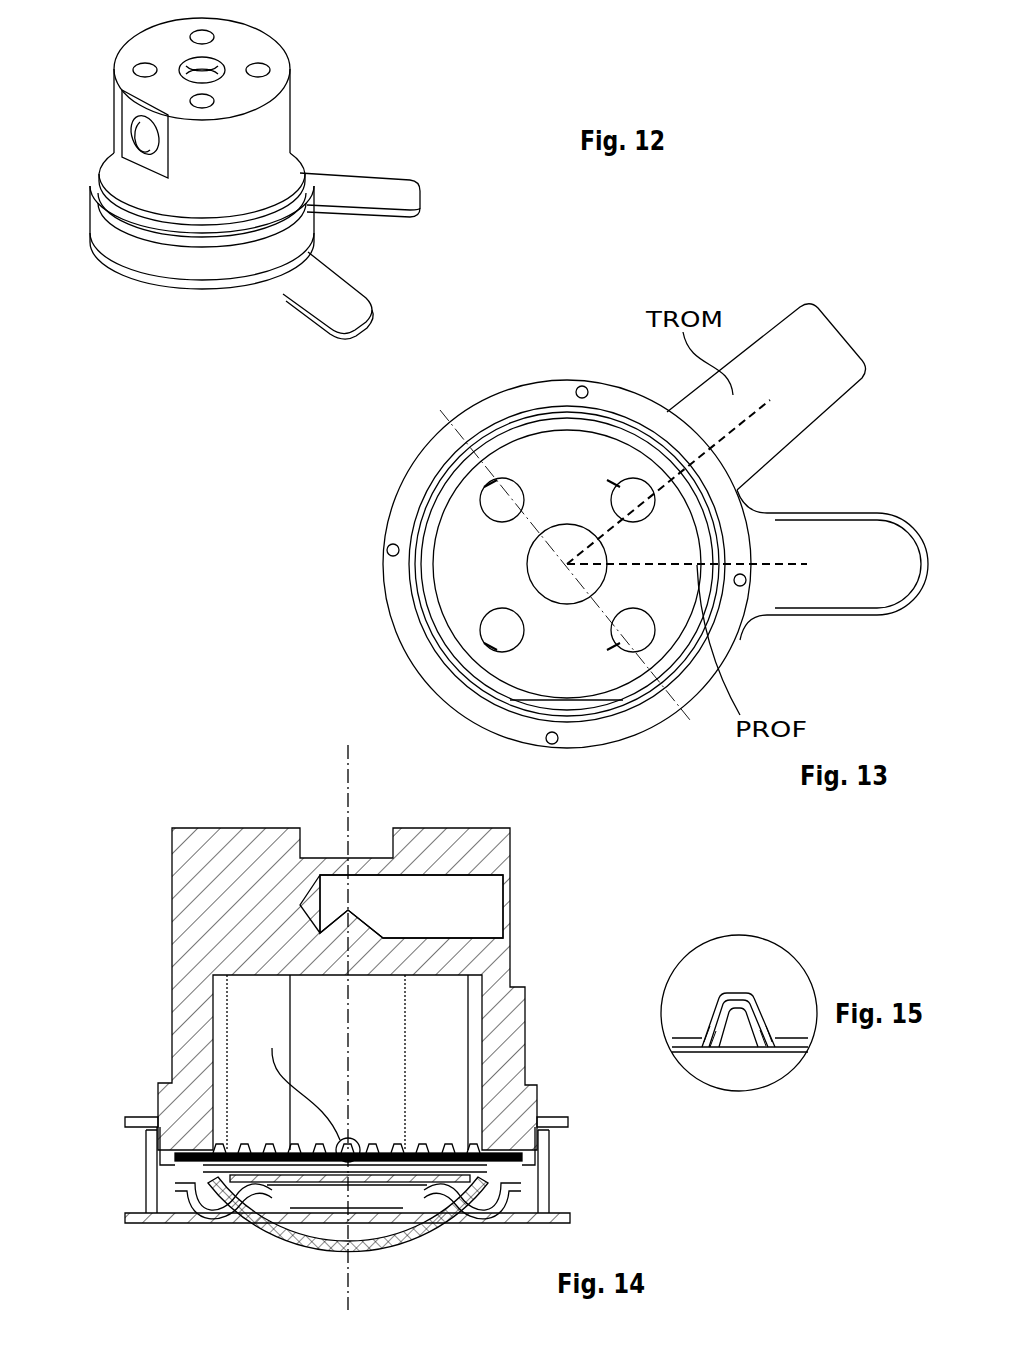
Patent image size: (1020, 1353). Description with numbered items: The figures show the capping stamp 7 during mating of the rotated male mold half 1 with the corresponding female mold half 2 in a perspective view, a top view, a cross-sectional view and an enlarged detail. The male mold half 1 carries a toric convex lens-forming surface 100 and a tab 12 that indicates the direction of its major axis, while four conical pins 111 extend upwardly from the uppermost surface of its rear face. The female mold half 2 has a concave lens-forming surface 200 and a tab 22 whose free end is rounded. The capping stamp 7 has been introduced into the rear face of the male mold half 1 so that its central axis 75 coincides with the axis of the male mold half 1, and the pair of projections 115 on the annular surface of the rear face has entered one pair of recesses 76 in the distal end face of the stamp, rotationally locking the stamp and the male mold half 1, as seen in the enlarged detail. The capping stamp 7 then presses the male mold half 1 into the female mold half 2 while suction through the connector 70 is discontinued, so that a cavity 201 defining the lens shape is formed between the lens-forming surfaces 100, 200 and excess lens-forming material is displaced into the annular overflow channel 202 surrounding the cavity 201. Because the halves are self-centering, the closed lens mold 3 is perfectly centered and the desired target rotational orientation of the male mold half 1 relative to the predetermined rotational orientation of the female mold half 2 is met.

In FIG. 12, the male mold half 1 is at (338, 155).
In FIG. 14, the male mold half 1 is at (575, 1122).
In FIG. 12, the female mold half 2 is at (340, 255).
In FIG. 14, the female mold half 2 is at (568, 1183).
In FIG. 12, the closed lens mold 3 is at (145, 303).
In FIG. 14, the closed lens mold 3 is at (120, 1068).
In FIG. 12, the capping stamp 7 is at (293, 105).
In FIG. 13, the capping stamp 7 is at (538, 445).
In FIG. 12, the tab 12 is at (390, 200).
In FIG. 13, the tab 12 is at (790, 383).
In FIG. 12, the tab 22 is at (297, 283).
In FIG. 13, the tab 22 is at (817, 575).
In FIG. 12, the connector 70 is at (143, 137).
In FIG. 14, the connector 70 is at (512, 910).
In FIG. 14, the central axis 75 is at (345, 775).
In FIG. 15, the recesses 76 is at (738, 995).
In FIG. 14, the convex lens-forming surface 100 is at (368, 1235).
In FIG. 13, the conical pins 111 is at (393, 545).
In FIG. 15, the projections 115 is at (740, 1030).
In FIG. 14, the concave lens-forming surface 200 is at (327, 1240).
In FIG. 14, the cavity 201 is at (415, 1240).
In FIG. 14, the overflow channel 202 is at (220, 1218).